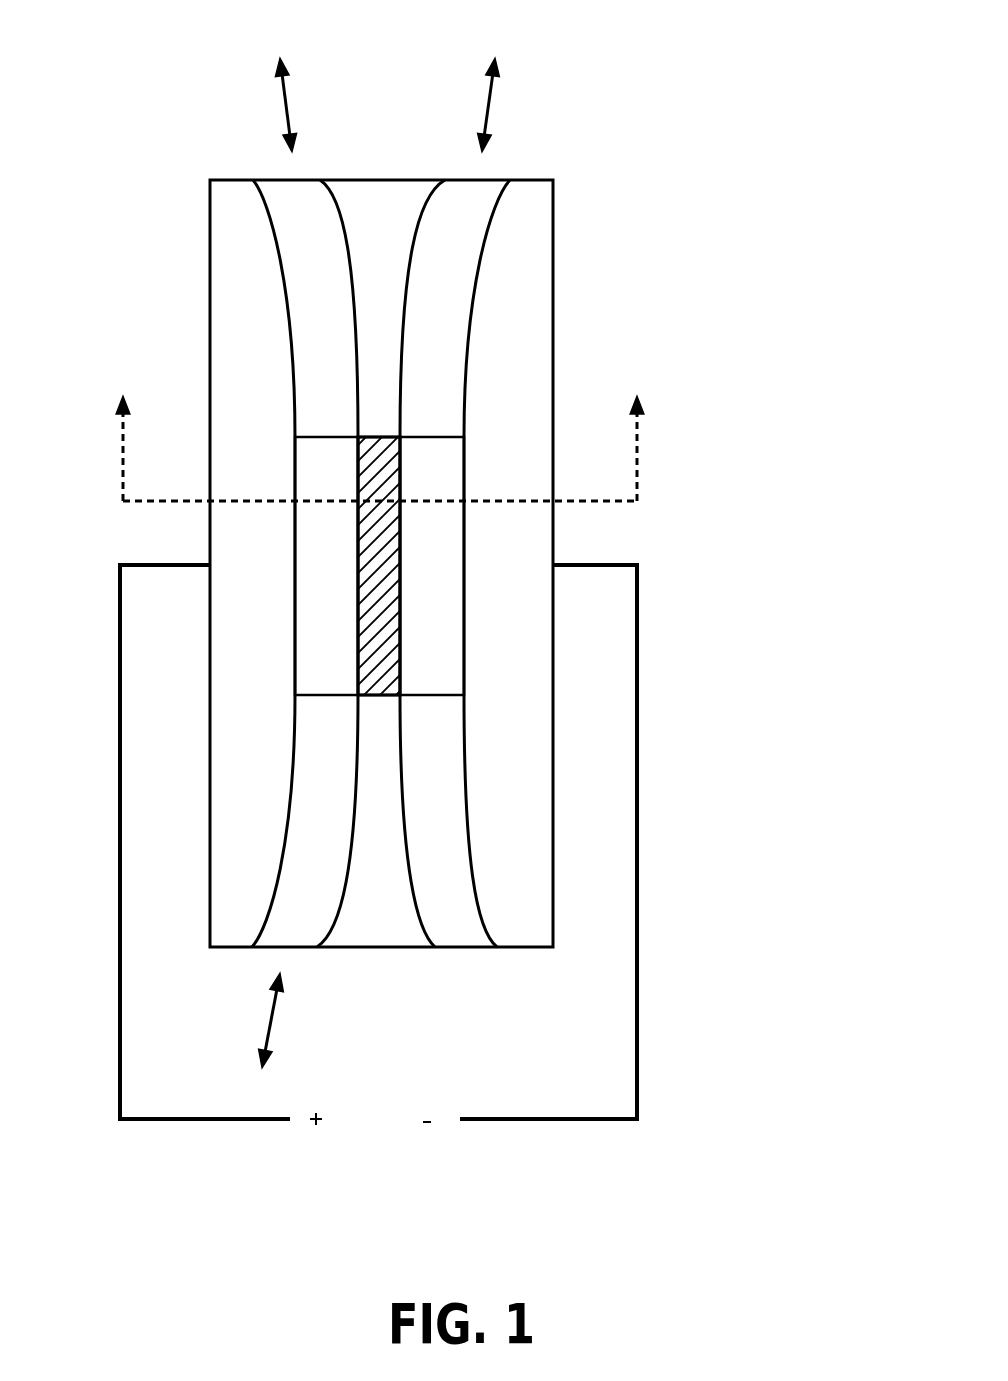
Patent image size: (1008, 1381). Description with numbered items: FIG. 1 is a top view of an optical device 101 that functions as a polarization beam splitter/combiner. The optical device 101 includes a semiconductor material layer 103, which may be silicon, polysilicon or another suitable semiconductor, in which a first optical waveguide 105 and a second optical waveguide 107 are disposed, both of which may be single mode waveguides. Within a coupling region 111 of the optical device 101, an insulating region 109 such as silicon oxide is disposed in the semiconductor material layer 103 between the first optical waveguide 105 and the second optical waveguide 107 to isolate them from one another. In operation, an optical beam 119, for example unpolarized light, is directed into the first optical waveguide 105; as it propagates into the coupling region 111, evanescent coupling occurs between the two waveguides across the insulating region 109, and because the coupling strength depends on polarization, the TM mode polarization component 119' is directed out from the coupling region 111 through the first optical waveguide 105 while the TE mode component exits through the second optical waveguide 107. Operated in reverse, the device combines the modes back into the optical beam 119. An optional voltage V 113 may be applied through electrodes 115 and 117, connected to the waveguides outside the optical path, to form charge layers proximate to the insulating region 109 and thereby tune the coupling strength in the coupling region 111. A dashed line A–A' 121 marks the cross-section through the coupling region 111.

The optical device 101 is at (773, 22).
The semiconductor material layer 103 is at (553, 280).
The first optical waveguide 105 is at (290, 797).
The second optical waveguide 107 is at (467, 808).
The insulating region 109 is at (407, 610).
The coupling region 111 is at (293, 633).
The voltage V 113 is at (383, 1138).
The electrode 115 is at (107, 835).
The electrode 117 is at (655, 813).
The optical beam 119 is at (242, 1020).
The TM mode polarization component 119' is at (209, 105).
The dashed line A–A' 121 is at (637, 473).